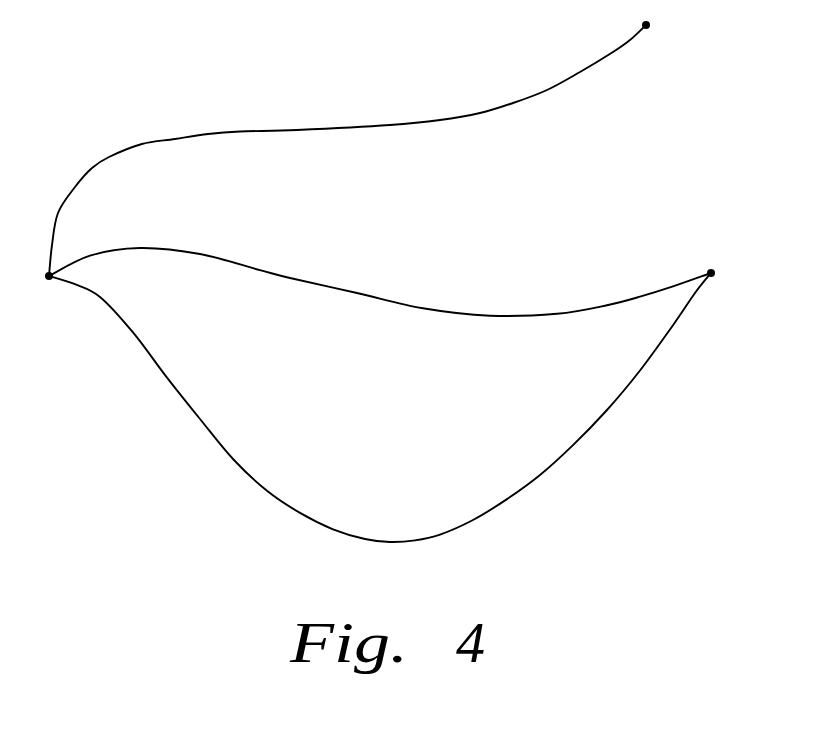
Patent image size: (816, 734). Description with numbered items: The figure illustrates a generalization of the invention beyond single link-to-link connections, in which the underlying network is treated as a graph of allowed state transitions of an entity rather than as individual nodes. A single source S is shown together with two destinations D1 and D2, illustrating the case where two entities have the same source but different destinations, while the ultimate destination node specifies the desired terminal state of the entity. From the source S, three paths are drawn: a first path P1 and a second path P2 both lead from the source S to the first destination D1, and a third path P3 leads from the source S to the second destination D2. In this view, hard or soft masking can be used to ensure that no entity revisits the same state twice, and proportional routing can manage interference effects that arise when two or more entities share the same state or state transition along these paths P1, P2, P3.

The source node S is at (40, 296).
The first destination node D1 is at (737, 275).
The second destination node D2 is at (672, 26).
The first path P1 is at (380, 407).
The second path P2 is at (380, 282).
The third path P3 is at (347, 150).